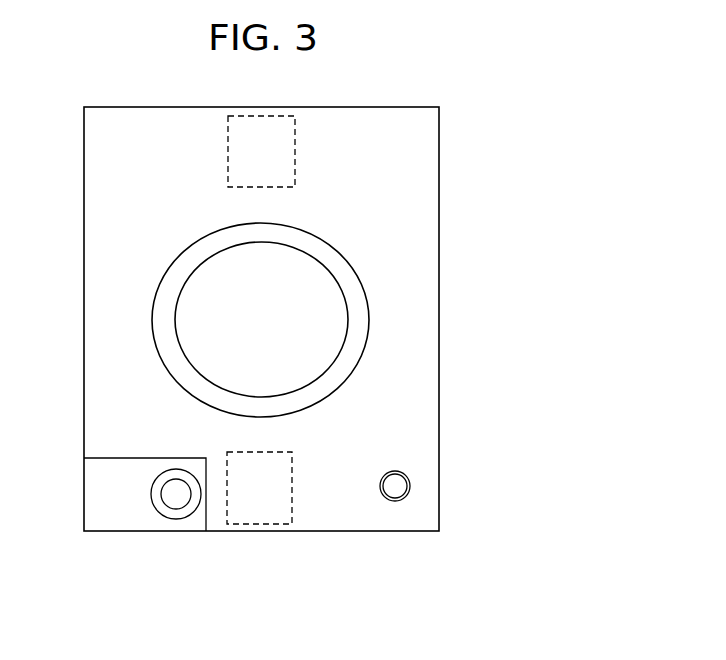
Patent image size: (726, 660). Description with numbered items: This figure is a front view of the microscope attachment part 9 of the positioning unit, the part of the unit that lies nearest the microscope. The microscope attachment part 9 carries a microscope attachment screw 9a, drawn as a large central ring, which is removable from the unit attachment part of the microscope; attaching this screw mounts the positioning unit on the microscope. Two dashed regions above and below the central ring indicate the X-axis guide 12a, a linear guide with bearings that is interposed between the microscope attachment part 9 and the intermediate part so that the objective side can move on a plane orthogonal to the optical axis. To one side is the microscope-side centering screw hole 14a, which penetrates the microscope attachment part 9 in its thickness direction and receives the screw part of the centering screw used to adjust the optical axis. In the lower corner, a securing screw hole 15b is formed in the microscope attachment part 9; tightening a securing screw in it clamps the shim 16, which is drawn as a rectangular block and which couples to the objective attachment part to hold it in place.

The microscope attachment part 9 is at (83, 272).
The microscope attachment screw 9a is at (333, 245).
The X-axis guide 12a is at (295, 150).
The microscope-side centering screw hole 14a is at (410, 484).
The securing screw hole 15b is at (176, 497).
The shim 16 is at (158, 458).